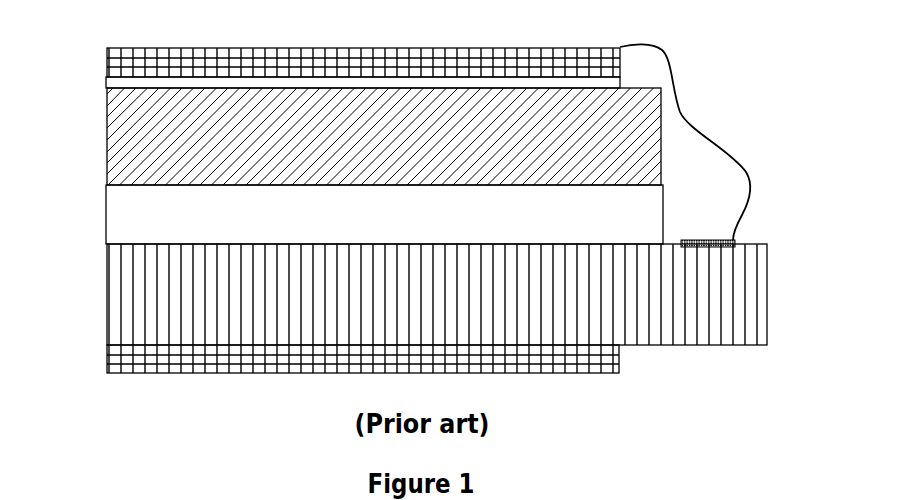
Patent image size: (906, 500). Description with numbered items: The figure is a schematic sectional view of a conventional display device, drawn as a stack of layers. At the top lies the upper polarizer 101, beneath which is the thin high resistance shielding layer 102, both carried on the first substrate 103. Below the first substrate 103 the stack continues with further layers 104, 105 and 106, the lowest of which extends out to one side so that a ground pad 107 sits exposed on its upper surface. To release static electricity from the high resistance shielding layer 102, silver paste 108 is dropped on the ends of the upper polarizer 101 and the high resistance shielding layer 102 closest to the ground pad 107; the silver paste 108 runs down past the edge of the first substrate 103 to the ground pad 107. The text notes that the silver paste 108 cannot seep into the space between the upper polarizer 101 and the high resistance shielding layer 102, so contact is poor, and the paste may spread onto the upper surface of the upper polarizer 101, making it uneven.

The upper polarizer 101 is at (107, 60).
The high resistance shielding layer 102 is at (106, 83).
The first substrate 103 is at (133, 139).
The blank substrate layer 104 is at (132, 220).
The striped lower layer 105 is at (145, 298).
The second grid electrode layer 106 is at (110, 363).
The ground pad 107 is at (710, 241).
The silver paste 108 is at (642, 62).